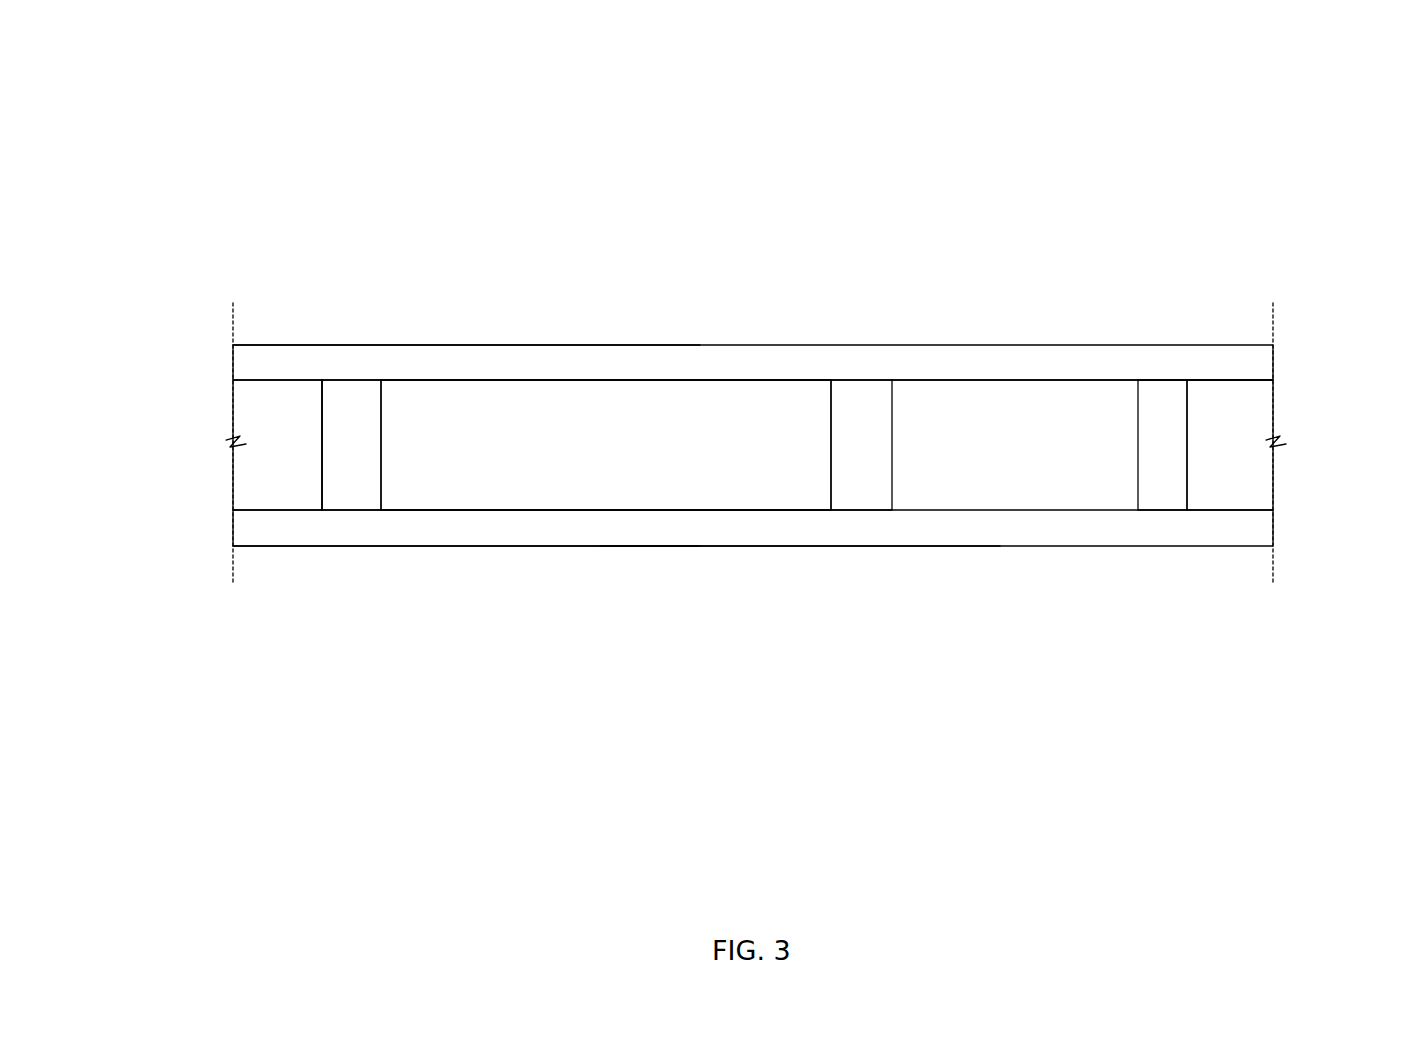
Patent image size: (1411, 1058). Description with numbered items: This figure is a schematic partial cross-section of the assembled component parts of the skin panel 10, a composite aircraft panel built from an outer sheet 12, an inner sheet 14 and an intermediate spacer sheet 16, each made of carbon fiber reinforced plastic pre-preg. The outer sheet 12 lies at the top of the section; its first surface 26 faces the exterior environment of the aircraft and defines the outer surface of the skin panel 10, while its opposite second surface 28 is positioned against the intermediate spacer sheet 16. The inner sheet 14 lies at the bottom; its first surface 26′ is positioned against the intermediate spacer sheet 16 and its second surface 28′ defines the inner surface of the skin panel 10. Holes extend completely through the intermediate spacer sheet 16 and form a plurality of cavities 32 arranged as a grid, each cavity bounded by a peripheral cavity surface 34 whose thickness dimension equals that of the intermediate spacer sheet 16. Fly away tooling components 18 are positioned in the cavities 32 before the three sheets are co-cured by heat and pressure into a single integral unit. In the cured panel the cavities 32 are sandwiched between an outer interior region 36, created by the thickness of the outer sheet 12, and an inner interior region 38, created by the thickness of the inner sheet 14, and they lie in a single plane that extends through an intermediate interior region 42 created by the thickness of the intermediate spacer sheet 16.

The skin panel 10 is at (1048, 142).
The outer sheet 12 is at (330, 345).
The inner sheet 14 is at (330, 546).
The intermediate spacer sheet 16 is at (215, 494).
The fly away tooling components 18 is at (1275, 420).
The first surface 26 is at (735, 345).
The first surface 26′ is at (562, 508).
The second surface 28 is at (478, 380).
The second surface 28′ is at (700, 548).
The cavities 32 is at (787, 443).
The peripheral cavity surface 34 is at (830, 483).
The outer interior region 36 is at (235, 362).
The inner interior region 38 is at (235, 522).
The intermediate interior region 42 is at (322, 444).